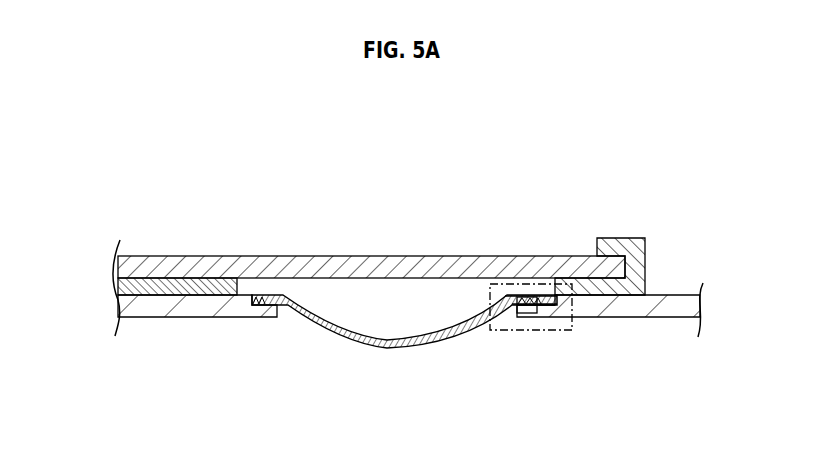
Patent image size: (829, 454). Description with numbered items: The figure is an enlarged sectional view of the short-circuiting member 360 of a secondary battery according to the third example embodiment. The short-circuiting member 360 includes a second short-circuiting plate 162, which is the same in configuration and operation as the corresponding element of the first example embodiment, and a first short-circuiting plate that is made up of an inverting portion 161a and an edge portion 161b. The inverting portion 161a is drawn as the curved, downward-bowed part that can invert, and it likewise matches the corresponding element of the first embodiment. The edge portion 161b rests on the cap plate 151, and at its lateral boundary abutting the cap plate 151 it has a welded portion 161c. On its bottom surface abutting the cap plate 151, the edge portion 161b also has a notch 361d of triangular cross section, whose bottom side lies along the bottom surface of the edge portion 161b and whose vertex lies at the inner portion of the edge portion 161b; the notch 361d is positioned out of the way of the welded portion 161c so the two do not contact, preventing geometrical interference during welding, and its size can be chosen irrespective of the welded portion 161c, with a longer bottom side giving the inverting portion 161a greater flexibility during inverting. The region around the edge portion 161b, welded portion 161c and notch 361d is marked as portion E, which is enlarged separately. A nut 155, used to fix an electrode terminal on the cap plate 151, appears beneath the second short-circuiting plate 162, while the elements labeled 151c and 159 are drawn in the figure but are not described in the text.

The short-circuiting member 360 is at (560, 192).
The nut 155 is at (188, 282).
The second short-circuiting plate 162 is at (307, 268).
The recess of frame 151c is at (490, 310).
The edge portion 161b is at (521, 315).
The clamp member 159 is at (620, 248).
The inverting portion 161a is at (460, 334).
The portion E is at (498, 331).
The notch 361d is at (526, 315).
The welded portion 161c is at (540, 305).
The cap plate 151 is at (668, 305).